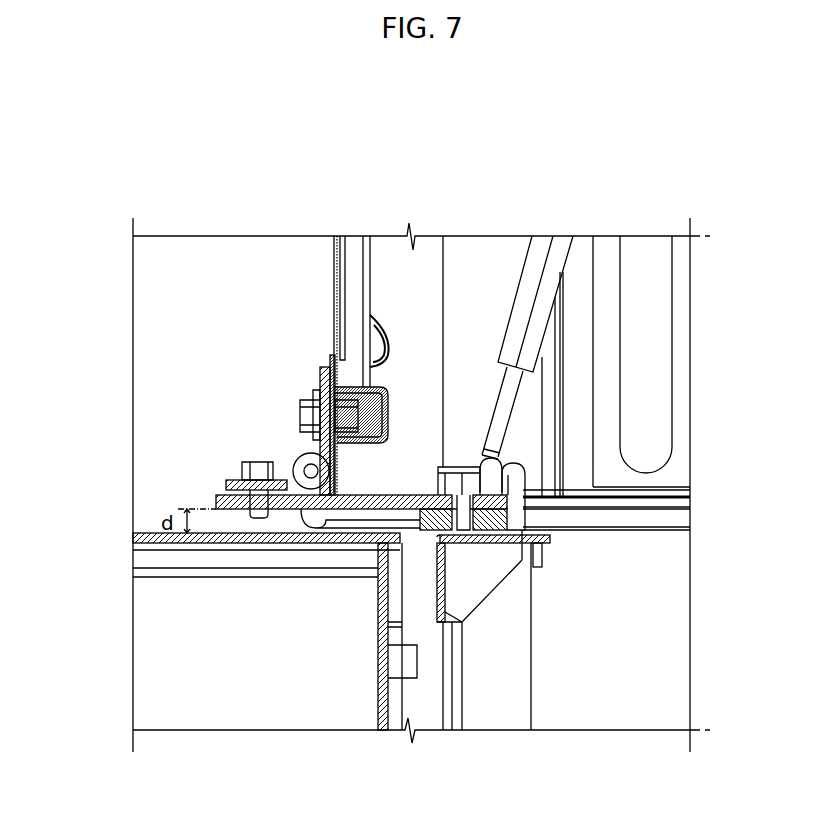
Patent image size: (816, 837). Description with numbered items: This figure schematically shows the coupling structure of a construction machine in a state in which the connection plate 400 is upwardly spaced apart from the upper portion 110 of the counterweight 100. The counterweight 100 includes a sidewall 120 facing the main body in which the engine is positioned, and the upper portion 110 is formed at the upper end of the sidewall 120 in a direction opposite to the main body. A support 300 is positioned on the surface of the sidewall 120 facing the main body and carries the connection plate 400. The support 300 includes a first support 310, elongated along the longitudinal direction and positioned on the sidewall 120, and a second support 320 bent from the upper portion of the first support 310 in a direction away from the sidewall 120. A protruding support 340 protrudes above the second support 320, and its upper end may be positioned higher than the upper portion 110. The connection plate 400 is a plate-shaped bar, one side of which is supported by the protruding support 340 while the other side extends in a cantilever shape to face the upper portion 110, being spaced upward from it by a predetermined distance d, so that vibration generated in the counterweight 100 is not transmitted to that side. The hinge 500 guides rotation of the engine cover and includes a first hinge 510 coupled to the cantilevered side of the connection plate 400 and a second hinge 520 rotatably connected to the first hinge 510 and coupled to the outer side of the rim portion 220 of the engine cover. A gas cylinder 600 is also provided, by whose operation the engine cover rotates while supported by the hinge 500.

The counterweight 100 is at (327, 664).
The upper portion 110 is at (157, 535).
The sidewall 120 is at (380, 690).
The rim portion 220 is at (334, 267).
The support 300 is at (590, 662).
The first support 310 is at (462, 622).
The second support 320 is at (550, 540).
The protruding support 340 is at (574, 580).
The connection plate 400 is at (402, 495).
The hinge 500 is at (264, 404).
The first hinge 510 is at (223, 480).
The second hinge 520 is at (320, 380).
The gas cylinder 600 is at (530, 266).